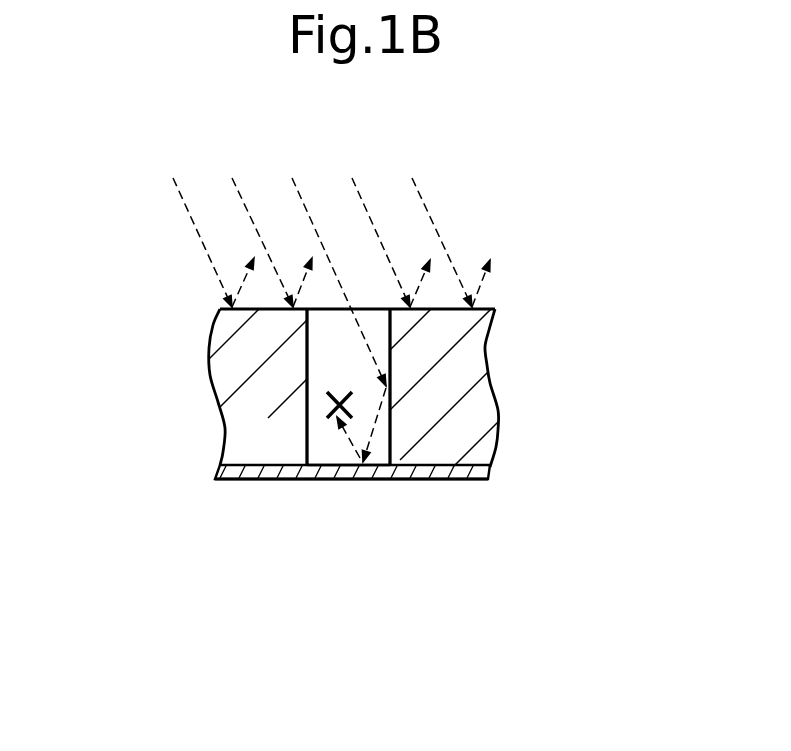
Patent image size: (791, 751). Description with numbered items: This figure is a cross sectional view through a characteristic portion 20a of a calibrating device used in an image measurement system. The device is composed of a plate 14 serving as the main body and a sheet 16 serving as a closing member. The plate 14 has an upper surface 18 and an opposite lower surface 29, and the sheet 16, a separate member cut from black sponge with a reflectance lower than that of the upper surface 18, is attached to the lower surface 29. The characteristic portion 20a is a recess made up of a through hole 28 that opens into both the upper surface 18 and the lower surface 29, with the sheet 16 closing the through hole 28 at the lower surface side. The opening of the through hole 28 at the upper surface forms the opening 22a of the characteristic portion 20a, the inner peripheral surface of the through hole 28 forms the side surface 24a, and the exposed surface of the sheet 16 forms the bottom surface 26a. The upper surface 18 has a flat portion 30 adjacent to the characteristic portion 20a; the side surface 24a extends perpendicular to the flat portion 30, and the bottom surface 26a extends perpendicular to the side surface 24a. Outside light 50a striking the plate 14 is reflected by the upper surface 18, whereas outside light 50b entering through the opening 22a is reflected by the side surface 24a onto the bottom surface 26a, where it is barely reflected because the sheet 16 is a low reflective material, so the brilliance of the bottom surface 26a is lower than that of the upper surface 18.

The plate 14 is at (500, 415).
The sheet 16 is at (492, 472).
The upper surface 18 is at (480, 307).
The characteristic portion 20a is at (417, 580).
The opening 22a is at (306, 330).
The side surface 24a is at (308, 427).
The bottom surface 26a is at (338, 467).
The through hole 28 is at (380, 447).
The lower surface 29 is at (495, 467).
The flat portion 30 is at (405, 310).
The outside light 50a is at (438, 232).
The outside light 50b is at (307, 207).